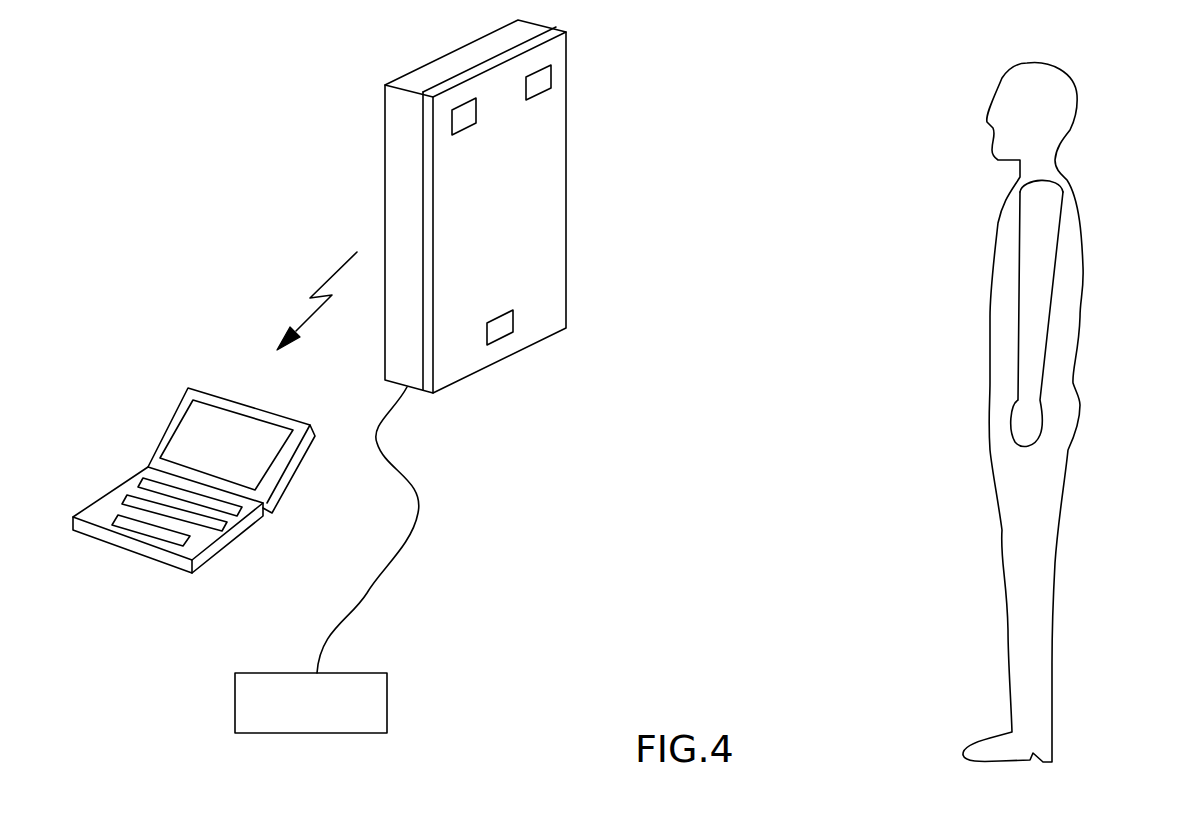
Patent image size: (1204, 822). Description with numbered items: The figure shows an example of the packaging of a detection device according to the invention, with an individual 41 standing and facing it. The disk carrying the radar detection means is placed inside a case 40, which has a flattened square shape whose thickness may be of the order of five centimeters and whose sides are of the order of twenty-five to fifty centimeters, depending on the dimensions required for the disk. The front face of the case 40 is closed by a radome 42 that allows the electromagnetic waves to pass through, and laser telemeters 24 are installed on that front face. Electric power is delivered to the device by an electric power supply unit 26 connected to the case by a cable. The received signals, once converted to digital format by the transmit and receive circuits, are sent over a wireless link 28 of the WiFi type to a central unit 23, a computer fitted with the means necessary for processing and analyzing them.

The central unit 23 is at (237, 543).
The laser telemeters 24 is at (547, 78).
The electric power supply unit 26 is at (317, 733).
The wireless link 28 is at (308, 319).
The case 40 is at (386, 83).
The individual 41 is at (1082, 303).
The radome 42 is at (545, 205).